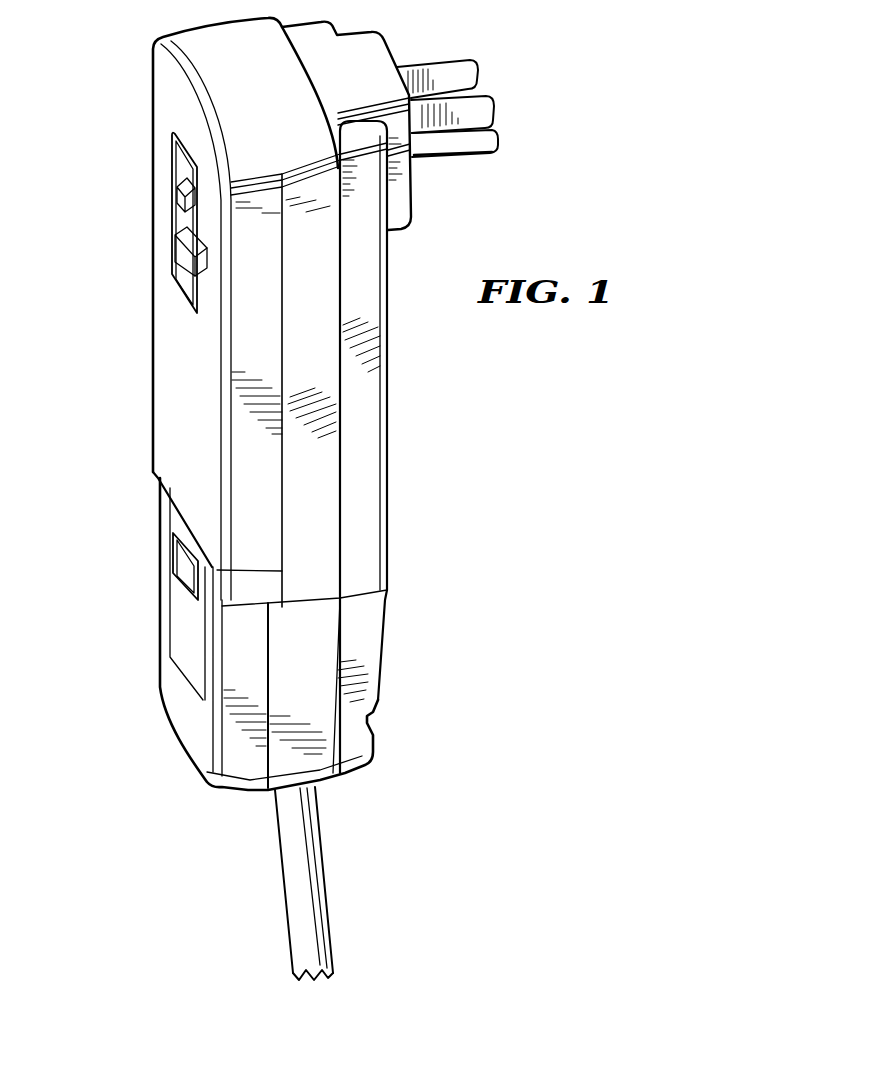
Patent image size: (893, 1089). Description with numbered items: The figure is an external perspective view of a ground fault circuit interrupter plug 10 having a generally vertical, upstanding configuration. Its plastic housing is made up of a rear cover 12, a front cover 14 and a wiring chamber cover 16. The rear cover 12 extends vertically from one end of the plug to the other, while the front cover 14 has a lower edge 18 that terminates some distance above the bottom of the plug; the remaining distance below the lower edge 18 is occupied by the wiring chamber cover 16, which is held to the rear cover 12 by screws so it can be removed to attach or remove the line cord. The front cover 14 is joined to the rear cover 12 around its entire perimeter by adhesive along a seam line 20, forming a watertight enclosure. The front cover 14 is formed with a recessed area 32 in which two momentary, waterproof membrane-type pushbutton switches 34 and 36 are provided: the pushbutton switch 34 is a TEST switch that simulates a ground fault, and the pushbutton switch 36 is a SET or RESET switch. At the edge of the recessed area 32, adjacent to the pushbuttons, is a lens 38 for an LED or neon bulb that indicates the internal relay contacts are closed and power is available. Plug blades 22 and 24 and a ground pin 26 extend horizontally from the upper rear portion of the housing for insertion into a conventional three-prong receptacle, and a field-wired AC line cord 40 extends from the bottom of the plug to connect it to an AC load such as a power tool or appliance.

The ground fault circuit interrupter plug 10 is at (136, 392).
The rear cover 12 is at (388, 380).
The front cover 14 is at (153, 60).
The wiring chamber cover 16 is at (188, 722).
The lower edge 18 is at (180, 510).
The seam line 20 is at (283, 290).
The plug blade 22 is at (487, 113).
The plug blade 24 is at (452, 70).
The ground pin 26 is at (499, 143).
The recessed area 32 is at (186, 298).
The pushbutton switch 34 is at (177, 200).
The pushbutton switch 36 is at (177, 247).
The lens 38 is at (210, 261).
The AC line cord 40 is at (313, 880).